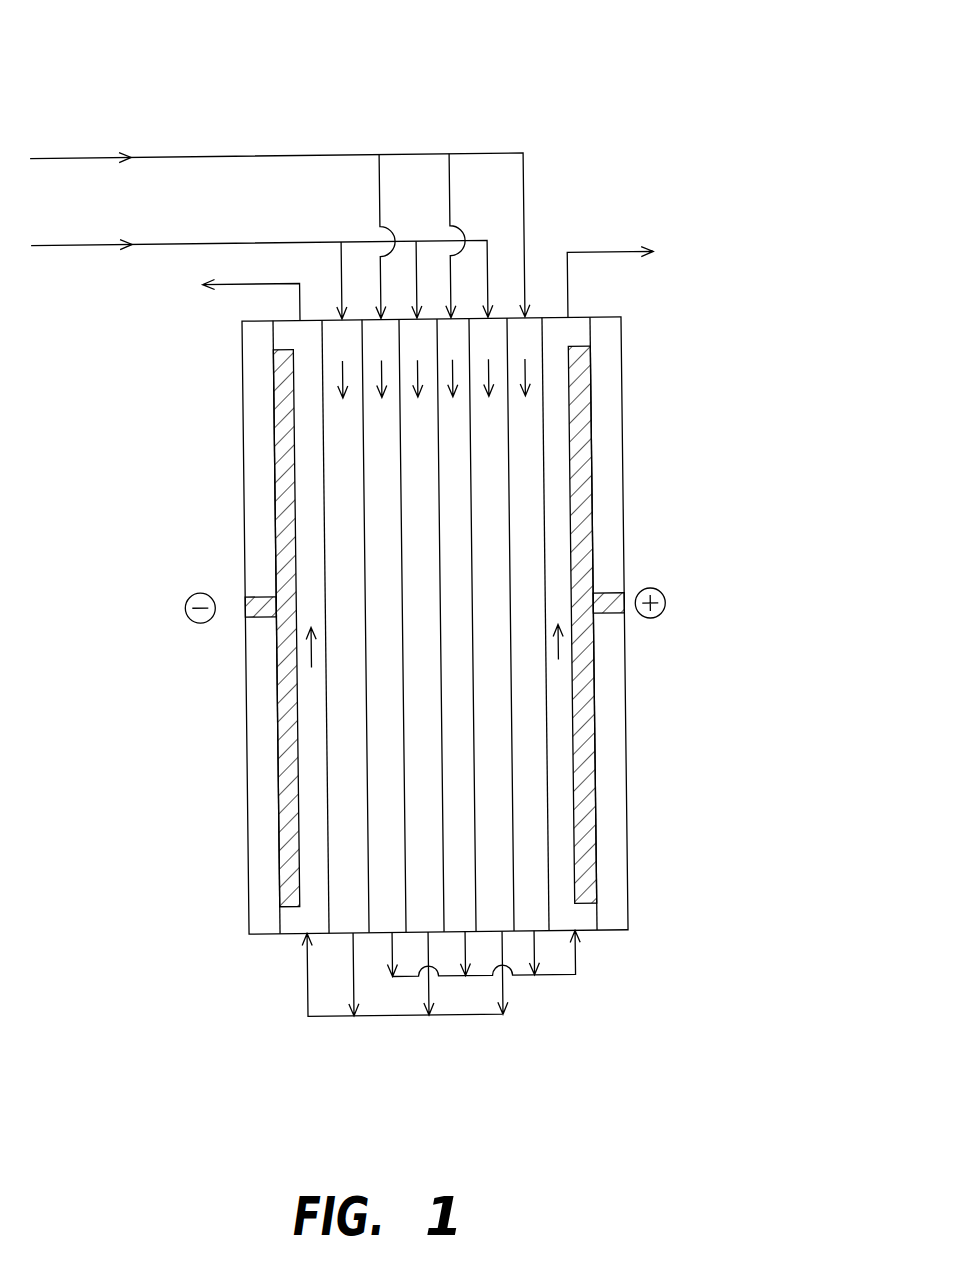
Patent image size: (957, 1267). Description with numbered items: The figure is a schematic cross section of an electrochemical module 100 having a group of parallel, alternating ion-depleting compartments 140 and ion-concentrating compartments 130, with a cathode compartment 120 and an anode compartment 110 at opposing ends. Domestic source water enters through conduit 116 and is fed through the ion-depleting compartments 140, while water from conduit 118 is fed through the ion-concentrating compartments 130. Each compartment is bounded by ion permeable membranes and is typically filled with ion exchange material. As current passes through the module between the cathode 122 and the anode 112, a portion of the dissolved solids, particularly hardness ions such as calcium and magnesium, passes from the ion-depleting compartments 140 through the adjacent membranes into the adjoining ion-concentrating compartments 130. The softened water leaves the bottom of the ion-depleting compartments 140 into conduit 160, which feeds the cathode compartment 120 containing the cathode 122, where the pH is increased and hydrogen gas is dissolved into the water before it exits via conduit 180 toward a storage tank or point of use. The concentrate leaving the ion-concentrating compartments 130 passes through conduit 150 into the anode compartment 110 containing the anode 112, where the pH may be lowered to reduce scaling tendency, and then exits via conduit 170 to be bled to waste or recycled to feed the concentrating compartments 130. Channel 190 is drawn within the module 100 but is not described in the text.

The module 100 is at (204, 55).
The anode compartment 110 is at (570, 332).
The anode 112 is at (590, 377).
The conduit 116 is at (232, 244).
The conduit 118 is at (222, 156).
The cathode compartment 120 is at (282, 333).
The cathode 122 is at (275, 505).
The ion-concentrating compartments 130 is at (537, 470).
The ion-depleting compartments 140 is at (502, 671).
The conduit 150 is at (553, 977).
The conduit 160 is at (386, 1016).
The conduit 170 is at (585, 252).
The conduit 180 is at (233, 285).
The flow channel 190 is at (517, 892).